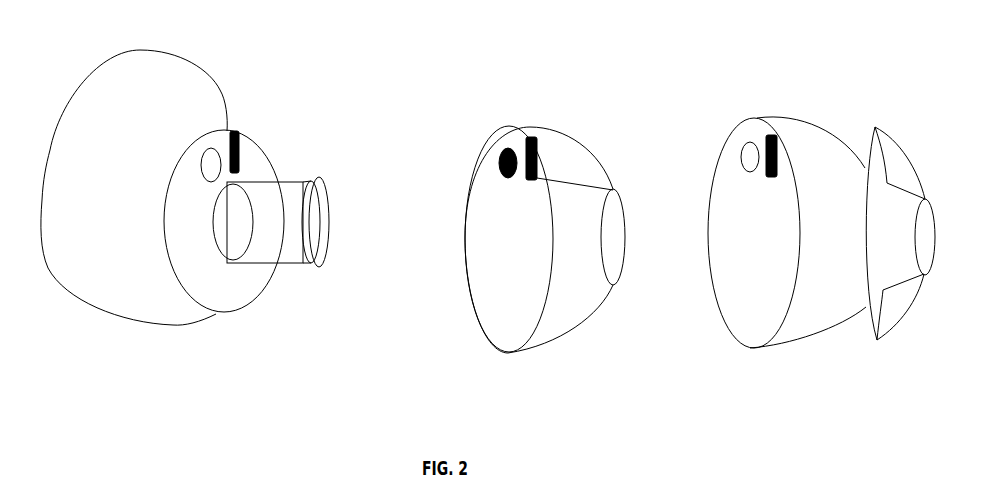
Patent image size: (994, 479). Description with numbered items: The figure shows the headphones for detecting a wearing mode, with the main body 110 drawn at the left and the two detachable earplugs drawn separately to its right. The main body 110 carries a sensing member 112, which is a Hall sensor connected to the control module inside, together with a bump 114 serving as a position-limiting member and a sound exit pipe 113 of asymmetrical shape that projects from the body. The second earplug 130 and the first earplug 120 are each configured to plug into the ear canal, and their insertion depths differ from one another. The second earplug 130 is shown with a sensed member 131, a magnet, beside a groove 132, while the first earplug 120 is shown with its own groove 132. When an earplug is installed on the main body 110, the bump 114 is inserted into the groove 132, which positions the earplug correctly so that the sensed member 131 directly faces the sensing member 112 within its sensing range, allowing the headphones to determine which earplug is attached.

The main body a 110 is at (88, 88).
The sensing member a 112 is at (213, 153).
The sound exit pipe 113 is at (292, 218).
The bump 114 is at (243, 142).
The first earplug 120 is at (812, 320).
The second earplug 130 is at (548, 330).
The sensed member a 131 is at (508, 148).
The groove 132 is at (536, 134).